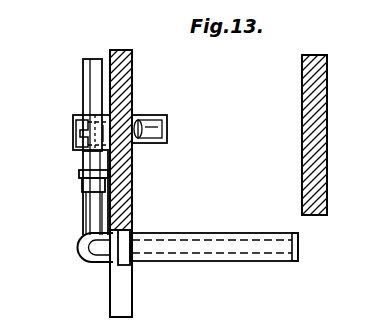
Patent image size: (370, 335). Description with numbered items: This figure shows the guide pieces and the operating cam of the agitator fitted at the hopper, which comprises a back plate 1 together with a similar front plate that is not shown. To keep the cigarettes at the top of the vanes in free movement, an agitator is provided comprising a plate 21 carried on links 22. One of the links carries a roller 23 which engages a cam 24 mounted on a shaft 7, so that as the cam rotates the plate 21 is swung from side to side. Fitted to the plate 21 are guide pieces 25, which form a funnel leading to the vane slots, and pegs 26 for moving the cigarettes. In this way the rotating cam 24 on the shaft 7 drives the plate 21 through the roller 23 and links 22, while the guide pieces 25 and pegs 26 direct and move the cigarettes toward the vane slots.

The back plate 1 is at (126, 90).
The shaft 7 is at (158, 118).
The plate 21 is at (123, 238).
The links 22 is at (90, 200).
The roller 23 is at (85, 165).
The cam 24 is at (92, 93).
The guide pieces 25 is at (298, 258).
The pegs 26 is at (222, 247).